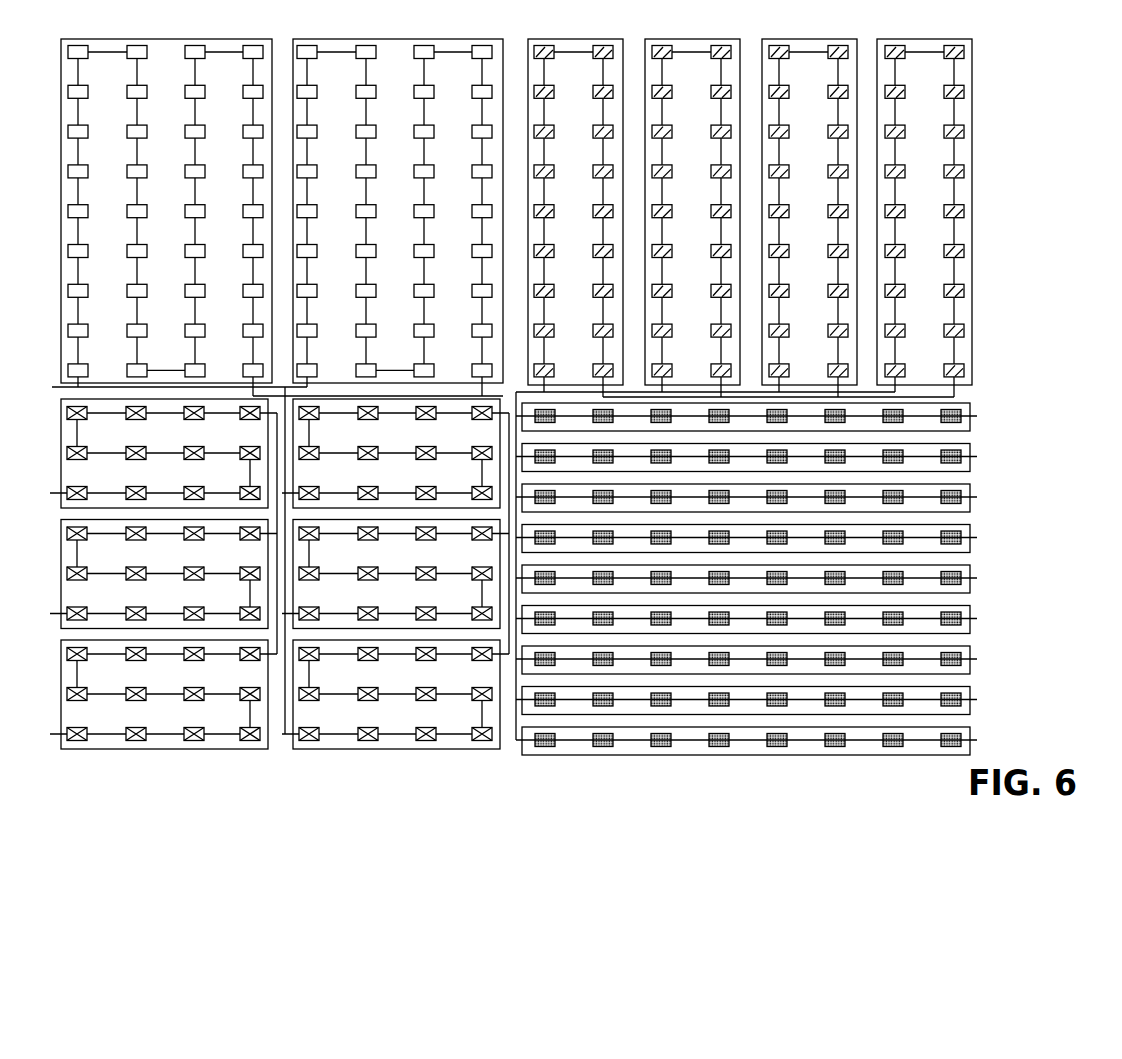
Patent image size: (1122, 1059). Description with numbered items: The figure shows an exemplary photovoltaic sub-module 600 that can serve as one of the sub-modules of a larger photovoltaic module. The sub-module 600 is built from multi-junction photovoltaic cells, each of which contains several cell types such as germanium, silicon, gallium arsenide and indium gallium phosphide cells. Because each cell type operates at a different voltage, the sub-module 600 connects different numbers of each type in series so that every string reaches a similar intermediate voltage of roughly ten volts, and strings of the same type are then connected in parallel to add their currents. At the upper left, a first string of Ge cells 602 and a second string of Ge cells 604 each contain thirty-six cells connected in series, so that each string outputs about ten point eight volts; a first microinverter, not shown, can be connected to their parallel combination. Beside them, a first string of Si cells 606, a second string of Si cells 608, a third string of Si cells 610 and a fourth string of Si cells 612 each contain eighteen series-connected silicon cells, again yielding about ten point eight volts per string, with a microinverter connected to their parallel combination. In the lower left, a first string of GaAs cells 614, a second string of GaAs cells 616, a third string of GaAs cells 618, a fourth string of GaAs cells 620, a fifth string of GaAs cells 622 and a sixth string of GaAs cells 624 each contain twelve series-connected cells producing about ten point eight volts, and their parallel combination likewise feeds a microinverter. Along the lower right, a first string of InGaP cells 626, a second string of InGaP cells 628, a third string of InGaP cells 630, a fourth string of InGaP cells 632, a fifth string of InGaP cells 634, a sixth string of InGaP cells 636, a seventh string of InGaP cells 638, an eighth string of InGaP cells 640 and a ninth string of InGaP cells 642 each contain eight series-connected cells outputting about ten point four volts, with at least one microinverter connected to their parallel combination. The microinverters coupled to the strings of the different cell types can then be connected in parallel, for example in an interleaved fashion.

The photovoltaic sub-module 600 is at (570, 384).
The first string of Ge cells 602 is at (121, 39).
The second string of Ge cells 604 is at (353, 39).
The first string of Si cells 606 is at (555, 39).
The second string of Si cells 608 is at (673, 39).
The third string of Si cells 610 is at (792, 39).
The fourth string of Si cells 612 is at (903, 39).
The first string of GaAs cells 614 is at (149, 725).
The second string of GaAs cells 616 is at (149, 605).
The third string of GaAs cells 618 is at (149, 485).
The fourth string of GaAs cells 620 is at (381, 725).
The fifth string of GaAs cells 622 is at (381, 605).
The sixth string of GaAs cells 624 is at (381, 485).
The first string of InGaP cells 626 is at (972, 410).
The second string of InGaP cells 628 is at (972, 450).
The third string of InGaP cells 630 is at (972, 491).
The fourth string of InGaP cells 632 is at (972, 532).
The fifth string of InGaP cells 634 is at (972, 572).
The sixth string of InGaP cells 636 is at (972, 612).
The seventh string of InGaP cells 638 is at (972, 653).
The eighth string of InGaP cells 640 is at (972, 694).
The ninth string of InGaP cells 642 is at (972, 734).